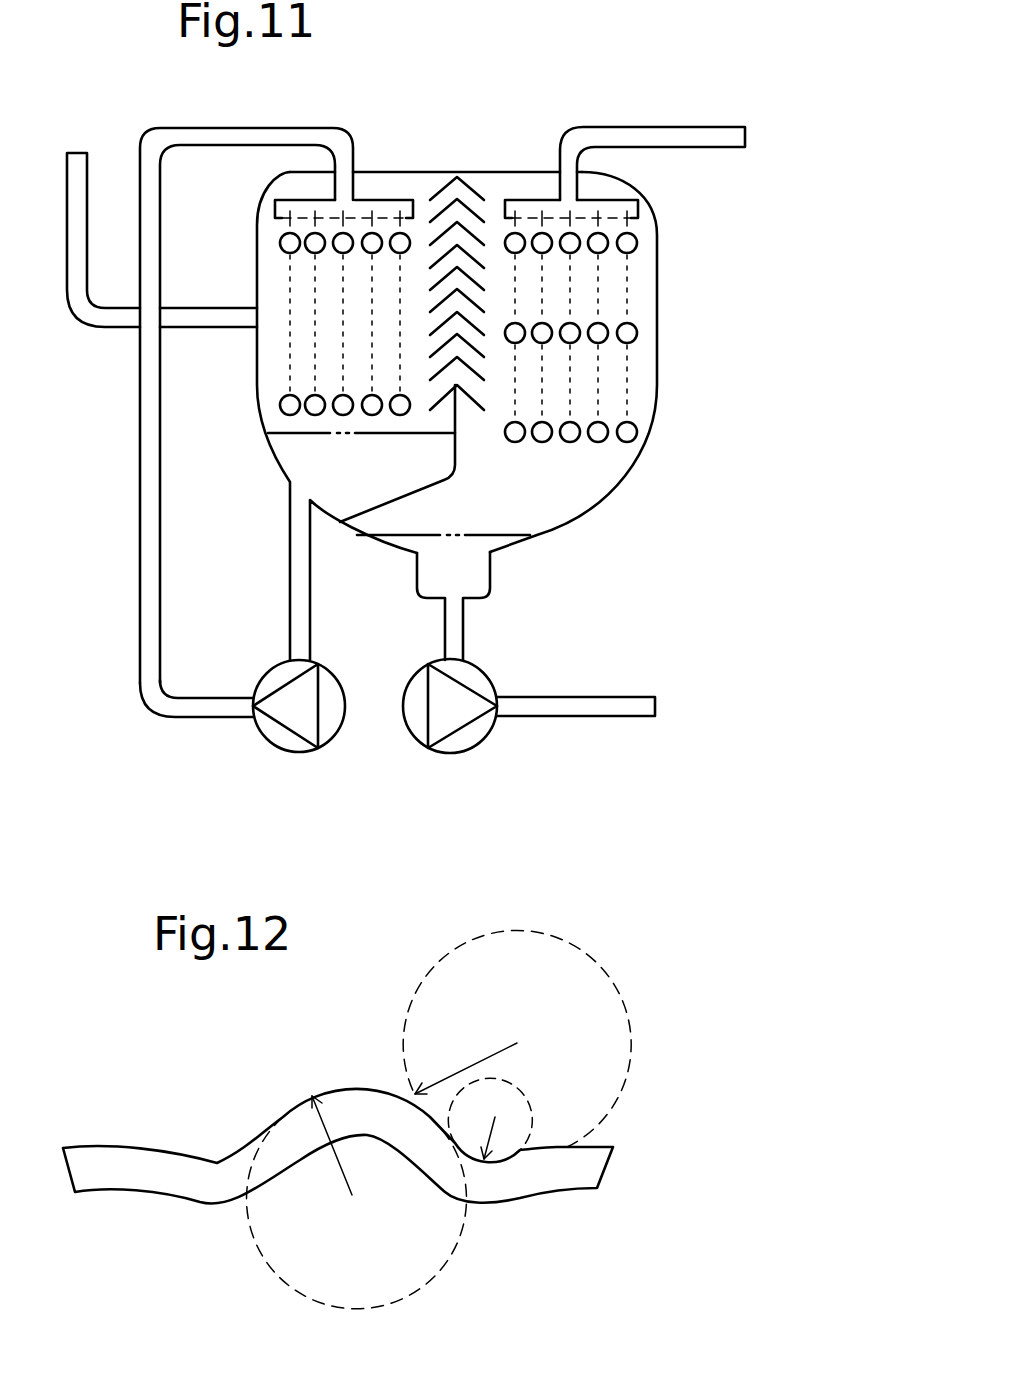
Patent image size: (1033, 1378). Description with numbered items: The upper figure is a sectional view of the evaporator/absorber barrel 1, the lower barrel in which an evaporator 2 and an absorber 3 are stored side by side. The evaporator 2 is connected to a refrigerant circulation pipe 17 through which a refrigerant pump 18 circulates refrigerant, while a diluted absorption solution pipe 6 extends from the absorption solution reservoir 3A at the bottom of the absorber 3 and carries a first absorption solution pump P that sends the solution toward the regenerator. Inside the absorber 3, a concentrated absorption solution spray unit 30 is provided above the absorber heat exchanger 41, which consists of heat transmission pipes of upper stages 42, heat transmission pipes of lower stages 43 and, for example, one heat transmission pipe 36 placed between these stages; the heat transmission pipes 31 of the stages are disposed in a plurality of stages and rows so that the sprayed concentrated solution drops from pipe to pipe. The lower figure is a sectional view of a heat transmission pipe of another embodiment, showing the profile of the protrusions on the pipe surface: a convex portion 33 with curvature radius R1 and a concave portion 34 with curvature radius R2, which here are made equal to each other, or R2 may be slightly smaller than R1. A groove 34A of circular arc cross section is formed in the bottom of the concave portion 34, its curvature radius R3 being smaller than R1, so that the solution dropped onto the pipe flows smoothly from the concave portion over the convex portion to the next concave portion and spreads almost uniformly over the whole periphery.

In FIG. 11, the evaporator/absorber barrel 1 is at (438, 172).
In FIG. 11, the evaporator 2 is at (390, 172).
In FIG. 11, the absorber 3 is at (512, 172).
In FIG. 11, the absorption solution reservoir 3A is at (497, 568).
In FIG. 11, the concentrated absorption solution spray unit 30 is at (538, 180).
In FIG. 11, the heat transmission pipe 31 is at (640, 242).
In FIG. 11, the heat transmission pipe 36 is at (637, 333).
In FIG. 11, the absorber heat exchanger 41 is at (640, 260).
In FIG. 11, the heat transmission pipes of upper stages 42 is at (638, 283).
In FIG. 11, the heat transmission pipes of lower stages 43 is at (638, 377).
In FIG. 11, the refrigerant circulation pipe 17 is at (158, 717).
In FIG. 11, the refrigerant pump 18 is at (288, 752).
In FIG. 11, the first absorption solution pump P is at (487, 740).
In FIG. 11, the diluted absorption solution pipe 6 is at (598, 717).
In FIG. 12, the convex portion 33 is at (338, 1103).
In FIG. 12, the concave portion 34 is at (517, 1038).
In FIG. 12, the groove 34A is at (556, 1256).
In FIG. 12, the curvature radius of the convex portion R1 is at (357, 1202).
In FIG. 12, the curvature radius of the concave portion R2 is at (466, 1058).
In FIG. 12, the curvature radius of the groove R3 is at (490, 1118).